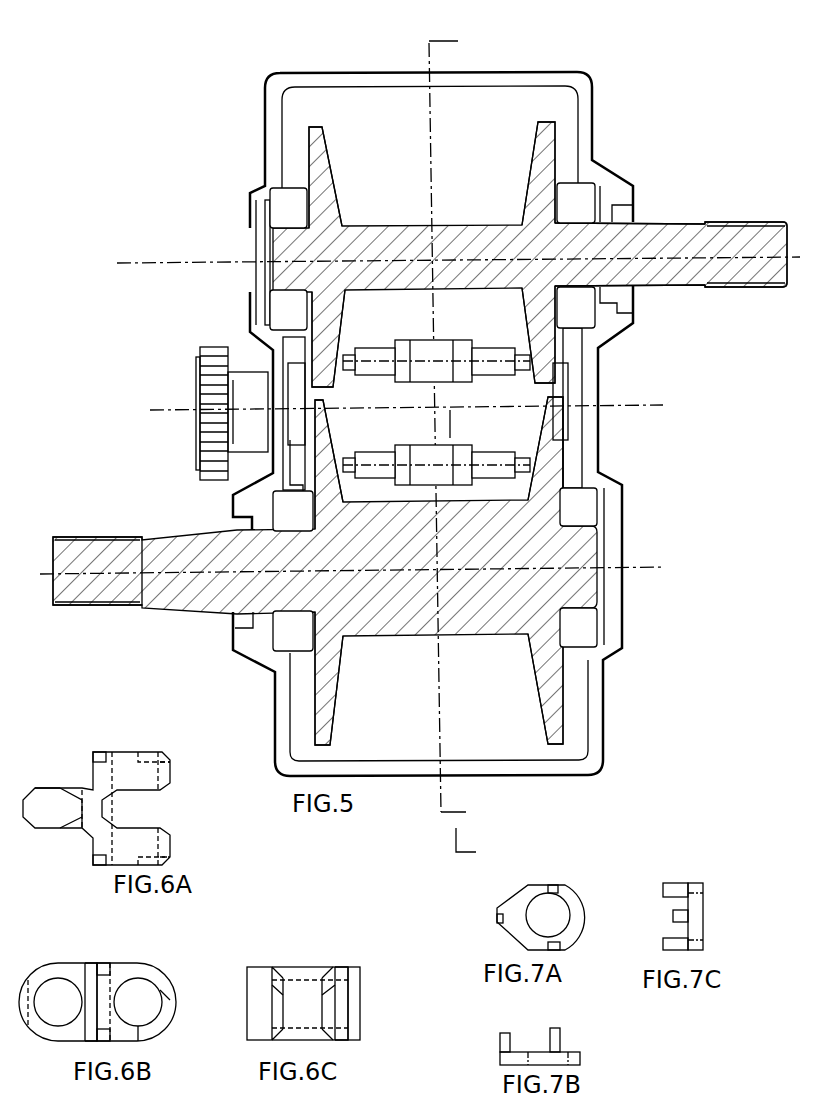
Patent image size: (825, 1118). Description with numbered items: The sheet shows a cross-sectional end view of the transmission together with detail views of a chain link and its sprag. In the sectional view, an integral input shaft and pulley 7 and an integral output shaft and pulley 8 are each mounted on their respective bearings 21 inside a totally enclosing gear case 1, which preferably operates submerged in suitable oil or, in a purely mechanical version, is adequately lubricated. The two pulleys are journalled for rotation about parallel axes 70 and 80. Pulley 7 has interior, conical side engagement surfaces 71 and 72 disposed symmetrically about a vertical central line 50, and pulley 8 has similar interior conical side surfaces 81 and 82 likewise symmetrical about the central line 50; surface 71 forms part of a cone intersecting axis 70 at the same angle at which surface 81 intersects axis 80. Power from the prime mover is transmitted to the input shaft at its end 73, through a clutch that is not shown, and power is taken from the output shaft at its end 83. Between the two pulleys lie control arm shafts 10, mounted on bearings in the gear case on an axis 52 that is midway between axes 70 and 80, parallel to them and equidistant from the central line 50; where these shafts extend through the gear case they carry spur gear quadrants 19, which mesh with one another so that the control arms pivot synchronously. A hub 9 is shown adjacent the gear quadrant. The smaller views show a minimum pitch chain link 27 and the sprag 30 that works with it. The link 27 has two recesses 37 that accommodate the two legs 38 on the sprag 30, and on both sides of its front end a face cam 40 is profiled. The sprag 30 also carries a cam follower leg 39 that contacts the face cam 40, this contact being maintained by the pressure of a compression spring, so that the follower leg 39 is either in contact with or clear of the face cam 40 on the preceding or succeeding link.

In FIG. 5, the gear case 1 is at (304, 73).
In FIG. 5, the integral input shaft and pulley 7 is at (655, 223).
In FIG. 5, the integral output shaft and pulley 8 is at (172, 612).
In FIG. 5, the hub of input gear 9 is at (245, 365).
In FIG. 5, the control arm shaft 10 is at (197, 412).
In FIG. 5, the spur gear quadrant 19 is at (175, 411).
In FIG. 5, the bearing 21 is at (282, 200).
In FIG. 6A, the link 27 is at (160, 752).
In FIG. 6B, the link 27 is at (160, 970).
In FIG. 6C, the link 27 is at (345, 967).
In FIG. 7A, the sprag 30 is at (575, 892).
In FIG. 7C, the sprag 30 is at (705, 895).
In FIG. 7B, the sprag 30 is at (582, 1060).
In FIG. 6A, the recess 37 is at (100, 752).
In FIG. 6B, the recess 37 is at (103, 963).
In FIG. 7A, the leg 38 is at (552, 885).
In FIG. 7C, the leg 38 is at (675, 883).
In FIG. 7B, the leg 38 is at (562, 1035).
In FIG. 7A, the cam follower leg 39 is at (498, 914).
In FIG. 7C, the cam follower leg 39 is at (673, 916).
In FIG. 7B, the cam follower leg 39 is at (500, 1040).
In FIG. 6B, the face cam 40 is at (172, 1012).
In FIG. 6C, the face cam 40 is at (255, 992).
In FIG. 5, the central line 50 is at (435, 162).
In FIG. 5, the axis 52 is at (155, 410).
In FIG. 5, the axis 70 is at (137, 263).
In FIG. 5, the conical side engagement surface 71 is at (333, 178).
In FIG. 5, the conical side engagement surface 72 is at (529, 180).
In FIG. 5, the end 73 is at (722, 230).
In FIG. 5, the axis 80 is at (650, 567).
In FIG. 5, the conical side surface 81 is at (334, 712).
In FIG. 5, the conical side surface 82 is at (541, 707).
In FIG. 5, the end 83 is at (80, 560).